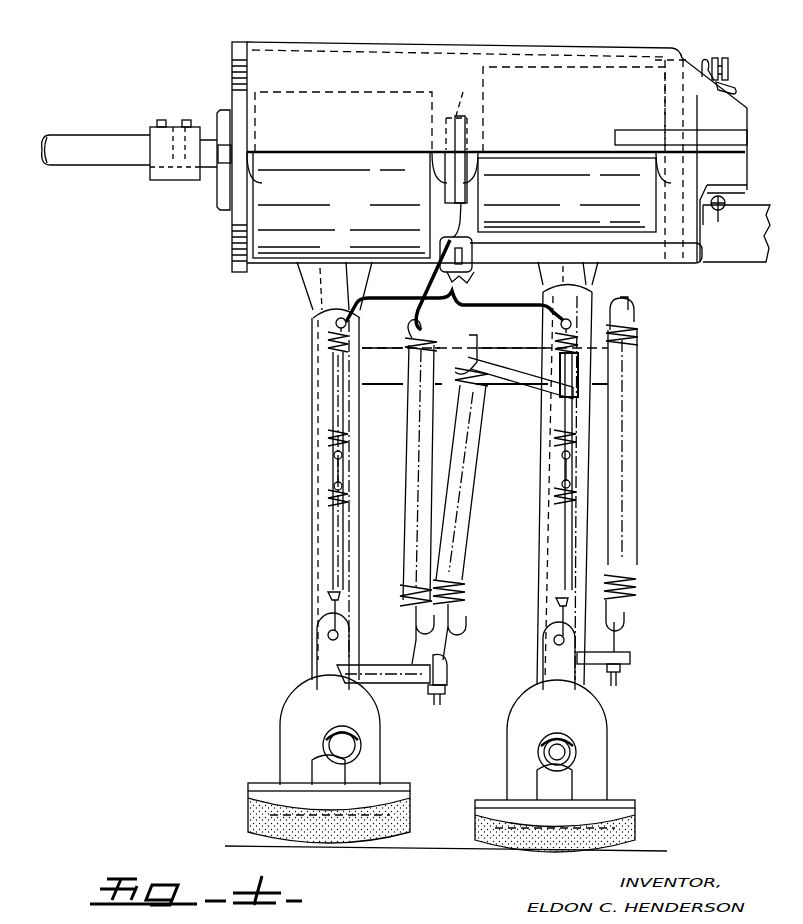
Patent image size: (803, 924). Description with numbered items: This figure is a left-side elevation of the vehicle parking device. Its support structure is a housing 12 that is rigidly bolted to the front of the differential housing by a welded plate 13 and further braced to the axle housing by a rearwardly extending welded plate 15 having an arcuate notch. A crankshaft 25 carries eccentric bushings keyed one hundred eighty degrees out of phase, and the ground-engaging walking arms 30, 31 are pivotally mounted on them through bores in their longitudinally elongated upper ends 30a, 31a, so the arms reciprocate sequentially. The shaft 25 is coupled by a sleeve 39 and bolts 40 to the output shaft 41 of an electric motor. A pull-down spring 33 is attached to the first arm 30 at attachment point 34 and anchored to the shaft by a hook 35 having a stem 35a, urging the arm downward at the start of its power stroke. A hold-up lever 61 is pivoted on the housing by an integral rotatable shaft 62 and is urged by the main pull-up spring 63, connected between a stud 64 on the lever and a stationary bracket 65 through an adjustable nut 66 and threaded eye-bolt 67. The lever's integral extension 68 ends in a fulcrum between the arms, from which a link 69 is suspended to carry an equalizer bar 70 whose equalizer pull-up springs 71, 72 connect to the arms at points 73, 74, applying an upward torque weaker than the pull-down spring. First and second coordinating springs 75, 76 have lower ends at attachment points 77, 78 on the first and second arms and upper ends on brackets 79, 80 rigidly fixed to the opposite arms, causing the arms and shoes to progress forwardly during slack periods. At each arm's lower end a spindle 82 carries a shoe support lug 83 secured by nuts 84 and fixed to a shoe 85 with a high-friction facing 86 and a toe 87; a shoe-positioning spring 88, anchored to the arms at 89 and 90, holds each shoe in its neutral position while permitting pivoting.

The housing 12 is at (441, 47).
The plate 13 is at (232, 76).
The rearwardly extending welded plate 15 is at (740, 258).
The shaft 25 is at (208, 178).
The first walking arm 30 is at (311, 532).
The enlarged upper end of first arm 30a is at (341, 205).
The second walking arm 31 is at (540, 563).
The enlarged upper end of second arm 31a is at (567, 195).
The pull-down spring 33 is at (405, 501).
The attachment point 34 is at (401, 664).
The hook 35 is at (464, 95).
The stem 35a is at (427, 290).
The sleeve 39 is at (161, 120).
The bolts 40 is at (190, 120).
The output shaft 41 is at (137, 167).
The hold-up lever 61 is at (709, 72).
The rotatable shaft 62 is at (684, 62).
The main pull-up spring 63 is at (737, 92).
The stud 64 is at (729, 80).
The stationary bracket 65 is at (727, 203).
The adjustable nut 66 is at (735, 212).
The threaded eye-bolt 67 is at (706, 222).
The integral extension 68 is at (630, 262).
The link 69 is at (474, 273).
The equalizer bar 70 is at (498, 307).
The equalizer pull-up spring 71 is at (330, 406).
The equalizer pull-up spring 72 is at (555, 437).
The attachment point 73 is at (330, 449).
The attachment point 74 is at (558, 463).
The first coordinating spring 75 is at (466, 578).
The second coordinating spring 76 is at (638, 472).
The attachment point 77 is at (448, 664).
The attachment point 78 is at (631, 656).
The bracket 79 is at (520, 392).
The bracket 80 is at (386, 383).
The spindle 82 is at (350, 738).
The shoe support lug 83 is at (544, 636).
The nuts 84 is at (544, 746).
The shoe 85 is at (414, 784).
The facing 86 is at (380, 846).
The toe 87 is at (318, 764).
The shoe-positioning spring 88 is at (328, 591).
The anchor point 89 is at (330, 474).
The anchor point 90 is at (554, 490).